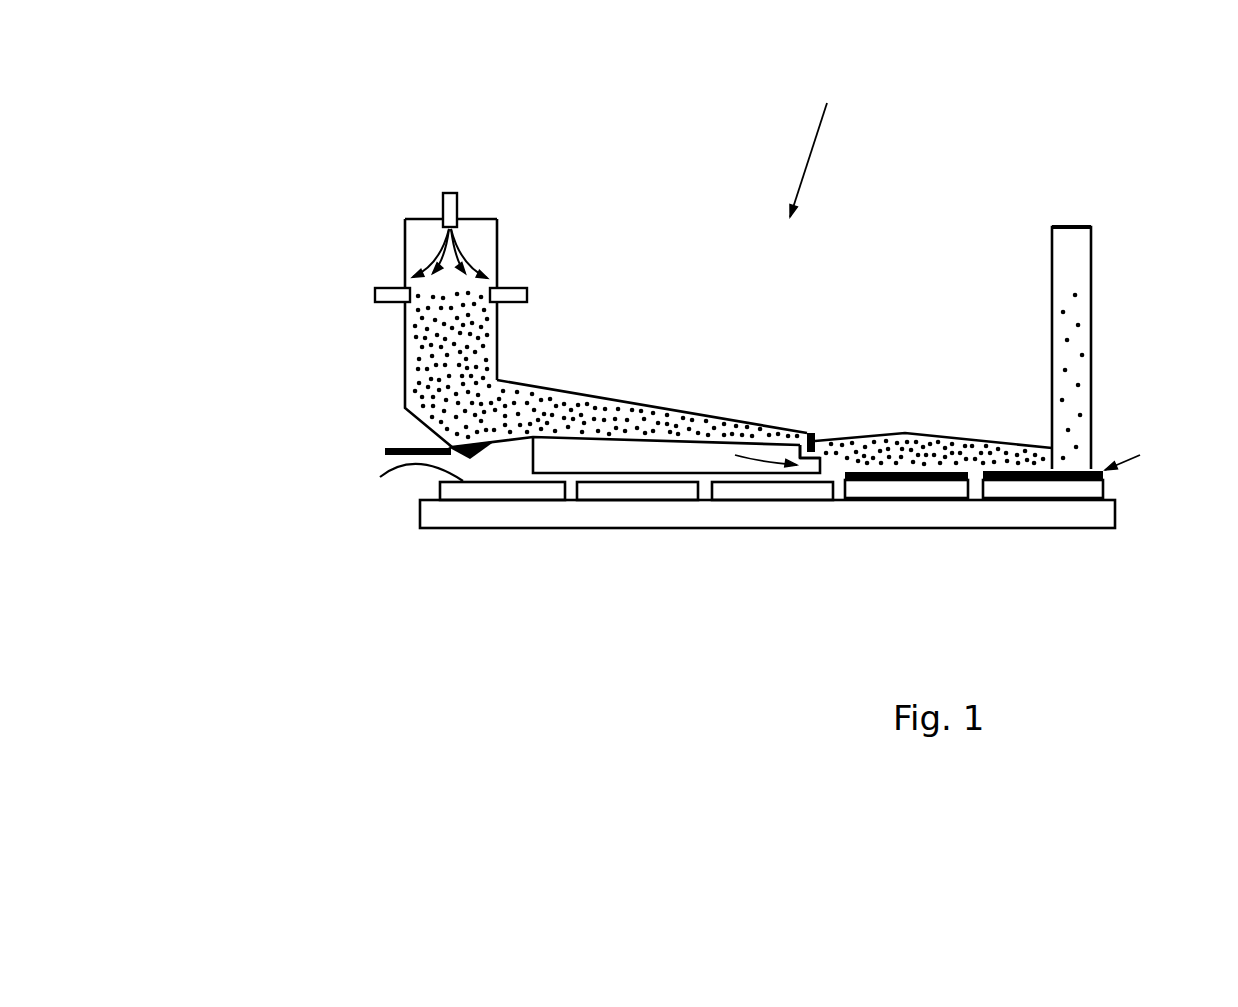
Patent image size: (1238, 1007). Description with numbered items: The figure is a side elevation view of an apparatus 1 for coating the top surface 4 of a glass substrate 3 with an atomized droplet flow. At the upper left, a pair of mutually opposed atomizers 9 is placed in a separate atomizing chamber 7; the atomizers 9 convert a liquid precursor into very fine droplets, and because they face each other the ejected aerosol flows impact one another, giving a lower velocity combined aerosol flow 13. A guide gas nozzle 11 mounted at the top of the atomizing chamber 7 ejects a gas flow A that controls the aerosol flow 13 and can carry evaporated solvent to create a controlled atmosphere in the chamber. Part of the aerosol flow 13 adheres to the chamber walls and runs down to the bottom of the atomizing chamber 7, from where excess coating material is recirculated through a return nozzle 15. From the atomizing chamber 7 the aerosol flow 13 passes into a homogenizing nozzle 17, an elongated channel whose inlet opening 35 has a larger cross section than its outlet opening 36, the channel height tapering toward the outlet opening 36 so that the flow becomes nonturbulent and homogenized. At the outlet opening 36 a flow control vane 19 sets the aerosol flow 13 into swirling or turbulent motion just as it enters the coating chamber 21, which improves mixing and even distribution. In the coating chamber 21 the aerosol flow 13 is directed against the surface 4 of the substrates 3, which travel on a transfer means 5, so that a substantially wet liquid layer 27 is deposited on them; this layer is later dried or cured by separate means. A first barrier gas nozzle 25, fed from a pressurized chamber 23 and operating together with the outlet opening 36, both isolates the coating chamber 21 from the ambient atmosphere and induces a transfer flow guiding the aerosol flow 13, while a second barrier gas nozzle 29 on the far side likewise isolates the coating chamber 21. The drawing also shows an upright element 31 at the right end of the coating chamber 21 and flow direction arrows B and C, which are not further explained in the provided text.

The apparatus 1 is at (826, 143).
The glass substrate 3 is at (509, 490).
The surface of substrate 4 is at (380, 477).
The transfer means 5 is at (441, 524).
The atomizing chamber 7 is at (405, 322).
The atomizers 9 is at (388, 290).
The guide gas nozzle 11 is at (452, 210).
The aerosol flow 13 is at (425, 340).
The return nozzle 15 is at (402, 455).
The homogenizing nozzle 17 is at (627, 402).
The flow control vane 19 is at (823, 432).
The coating chamber 21 is at (910, 433).
The pressurized chamber 23 is at (600, 455).
The first barrier gas nozzle 25 is at (815, 462).
The liquid layer 27 is at (1048, 477).
The second barrier gas nozzle 29 is at (1090, 465).
The suction tube 31 is at (1070, 225).
The inlet opening 35 is at (508, 395).
The outlet opening 36 is at (797, 432).
The gas flow A is at (460, 252).
The flow direction B is at (735, 455).
The flow direction C is at (1140, 455).